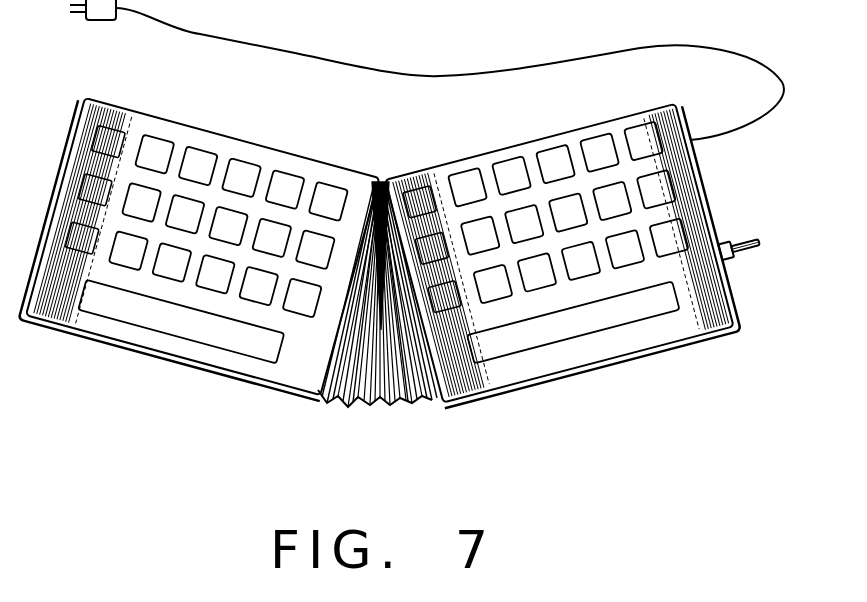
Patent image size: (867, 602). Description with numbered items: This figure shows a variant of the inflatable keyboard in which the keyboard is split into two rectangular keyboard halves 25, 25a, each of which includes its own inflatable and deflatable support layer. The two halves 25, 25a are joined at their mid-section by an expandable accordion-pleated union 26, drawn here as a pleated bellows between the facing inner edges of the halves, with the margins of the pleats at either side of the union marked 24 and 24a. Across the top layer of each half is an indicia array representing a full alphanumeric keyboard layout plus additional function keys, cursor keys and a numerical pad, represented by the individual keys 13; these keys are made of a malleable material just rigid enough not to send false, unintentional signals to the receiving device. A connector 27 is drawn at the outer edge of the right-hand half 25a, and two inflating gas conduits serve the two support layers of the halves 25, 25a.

The key 13 is at (284, 174).
The hinge (left side) 24 is at (335, 401).
The hinge (right side) 24a is at (414, 402).
The rectangular keyboard half 25 is at (141, 353).
The rectangular keyboard half 25a is at (623, 360).
The expandable accordion-pleated union 26 is at (370, 406).
The connector plug 27 is at (745, 253).